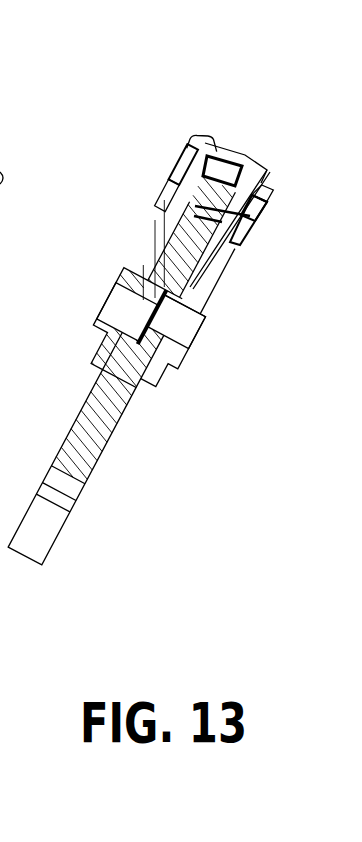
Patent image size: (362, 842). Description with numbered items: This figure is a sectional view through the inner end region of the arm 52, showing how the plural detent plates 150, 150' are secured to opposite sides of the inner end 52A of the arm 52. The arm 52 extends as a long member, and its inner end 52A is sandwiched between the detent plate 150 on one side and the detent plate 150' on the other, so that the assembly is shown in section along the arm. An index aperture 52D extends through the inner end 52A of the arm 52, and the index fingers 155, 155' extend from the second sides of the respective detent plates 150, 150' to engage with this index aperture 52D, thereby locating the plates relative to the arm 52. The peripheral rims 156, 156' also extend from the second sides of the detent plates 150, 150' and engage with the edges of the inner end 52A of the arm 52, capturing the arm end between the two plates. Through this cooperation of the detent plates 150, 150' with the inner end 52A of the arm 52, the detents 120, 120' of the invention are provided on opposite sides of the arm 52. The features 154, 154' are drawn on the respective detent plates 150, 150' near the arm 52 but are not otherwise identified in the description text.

The arm 52 is at (70, 510).
The inner end of the arm 52A is at (105, 378).
The index aperture 52D is at (203, 203).
The detent 120 is at (133, 179).
The detent 120' is at (278, 233).
The detent plate 150 is at (151, 238).
The detent plate 150' is at (248, 230).
The collar half 154 is at (94, 319).
The collar half 154' is at (196, 349).
The index finger 155 is at (160, 146).
The index finger 155' is at (295, 212).
The peripheral rim 156 is at (221, 143).
The peripheral rim 156' is at (295, 163).